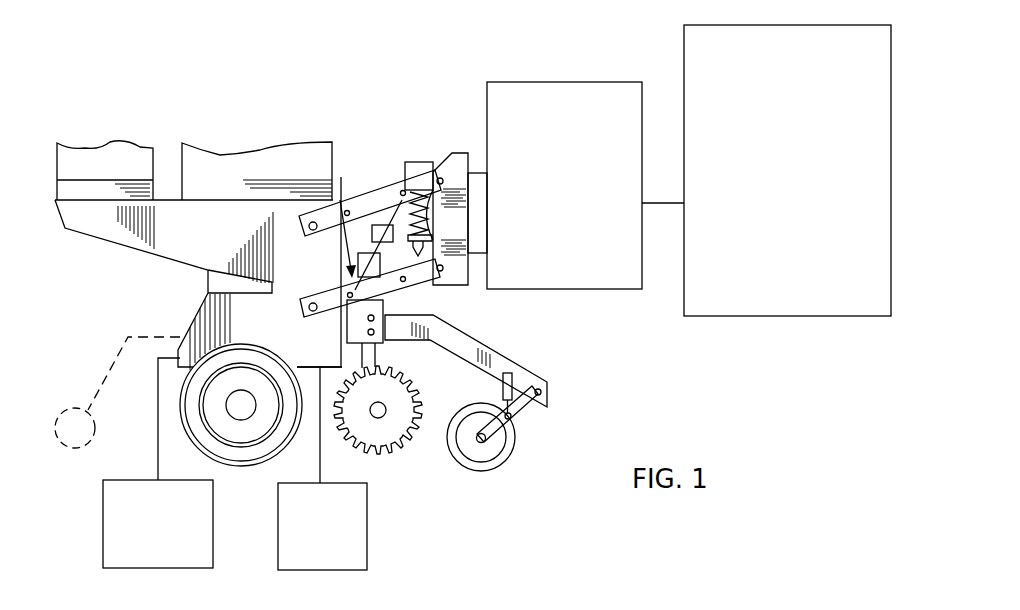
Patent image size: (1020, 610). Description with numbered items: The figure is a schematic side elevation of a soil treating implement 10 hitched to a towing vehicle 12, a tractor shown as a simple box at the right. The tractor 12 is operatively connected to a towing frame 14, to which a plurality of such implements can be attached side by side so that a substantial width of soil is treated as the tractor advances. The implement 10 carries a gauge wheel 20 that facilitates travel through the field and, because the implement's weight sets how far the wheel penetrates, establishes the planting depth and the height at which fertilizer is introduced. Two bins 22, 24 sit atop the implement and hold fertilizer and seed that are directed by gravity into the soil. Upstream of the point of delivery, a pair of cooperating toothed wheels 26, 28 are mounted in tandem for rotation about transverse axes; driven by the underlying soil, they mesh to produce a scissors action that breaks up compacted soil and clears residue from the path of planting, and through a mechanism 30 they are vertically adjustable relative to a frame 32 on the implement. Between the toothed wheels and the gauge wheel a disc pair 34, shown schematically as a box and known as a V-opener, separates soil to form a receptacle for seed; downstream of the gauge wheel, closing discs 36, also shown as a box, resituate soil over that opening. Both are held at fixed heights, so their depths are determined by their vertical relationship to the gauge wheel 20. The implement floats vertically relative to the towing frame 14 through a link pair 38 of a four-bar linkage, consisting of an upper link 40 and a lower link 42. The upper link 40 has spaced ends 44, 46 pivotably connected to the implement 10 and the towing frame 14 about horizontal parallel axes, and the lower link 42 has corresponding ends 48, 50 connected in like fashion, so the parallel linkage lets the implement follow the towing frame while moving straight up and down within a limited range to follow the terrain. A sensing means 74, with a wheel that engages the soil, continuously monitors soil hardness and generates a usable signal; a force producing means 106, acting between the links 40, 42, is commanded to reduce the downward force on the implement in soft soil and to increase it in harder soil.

The soil treating implement 10 is at (126, 272).
The towing vehicle 12 is at (779, 96).
The towing frame 14 is at (578, 82).
The gauge wheel 20 is at (253, 467).
The bin 22 is at (142, 152).
The bin 24 is at (213, 155).
The toothed wheel 26 is at (385, 440).
The toothed wheel 28 is at (407, 357).
The mechanism 30 is at (333, 200).
The frame 32 is at (245, 215).
The disc pair 34 is at (332, 556).
The closing discs 36 is at (167, 554).
The link pair 38 is at (385, 180).
The upper link 40 is at (372, 195).
The lower link 42 is at (412, 280).
The end of upper link 44 is at (326, 233).
The end of upper link 46 is at (422, 177).
The end of lower link 48 is at (323, 317).
The end of lower link 50 is at (457, 266).
The sensing means 74 is at (76, 388).
The force producing means 106 is at (393, 230).